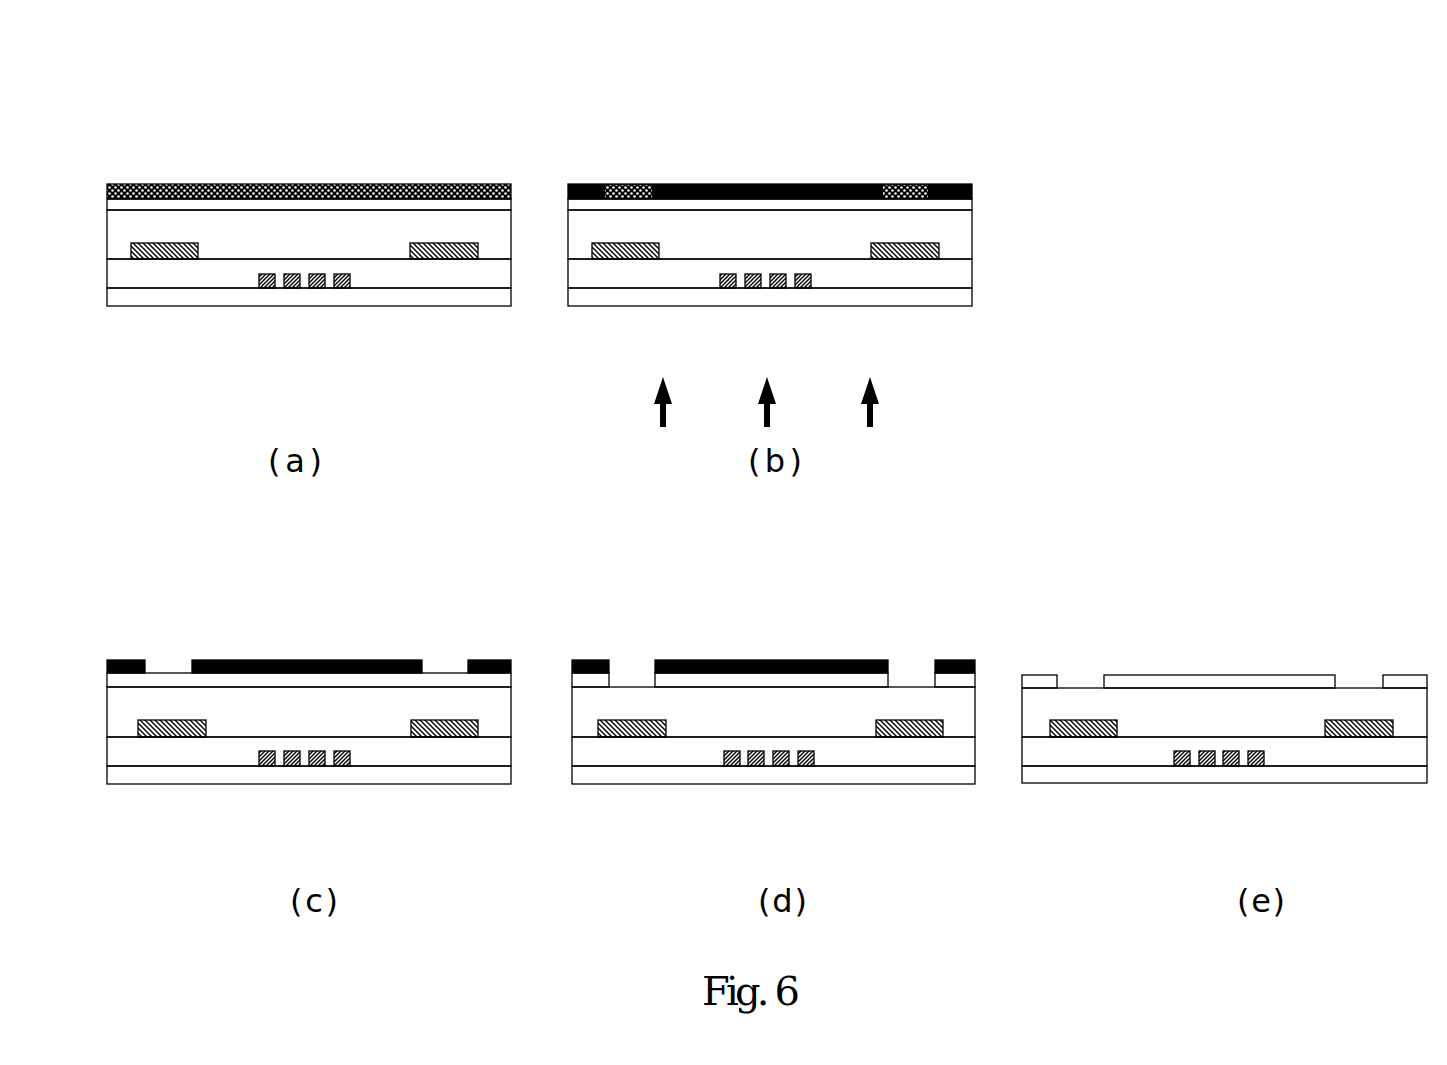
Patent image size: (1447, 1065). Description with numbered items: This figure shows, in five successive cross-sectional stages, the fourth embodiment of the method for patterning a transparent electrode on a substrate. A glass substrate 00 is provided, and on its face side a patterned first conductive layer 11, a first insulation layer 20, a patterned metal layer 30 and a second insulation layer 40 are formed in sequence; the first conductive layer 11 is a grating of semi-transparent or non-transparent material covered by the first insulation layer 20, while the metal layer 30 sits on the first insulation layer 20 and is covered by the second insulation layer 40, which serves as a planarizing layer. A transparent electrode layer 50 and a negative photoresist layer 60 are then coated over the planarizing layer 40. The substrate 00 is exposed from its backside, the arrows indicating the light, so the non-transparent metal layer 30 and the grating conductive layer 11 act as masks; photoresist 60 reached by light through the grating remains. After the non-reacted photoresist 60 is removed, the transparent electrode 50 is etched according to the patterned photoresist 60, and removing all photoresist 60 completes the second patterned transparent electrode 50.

The glass substrate 00 is at (462, 298).
The first conductive layer 11 is at (317, 287).
The first insulation layer 20 is at (213, 277).
The metal layer 30 is at (148, 258).
The second insulation layer 40 is at (373, 227).
The transparent electrode layer 50 is at (255, 205).
The negative photoresist layer 60 is at (178, 185).